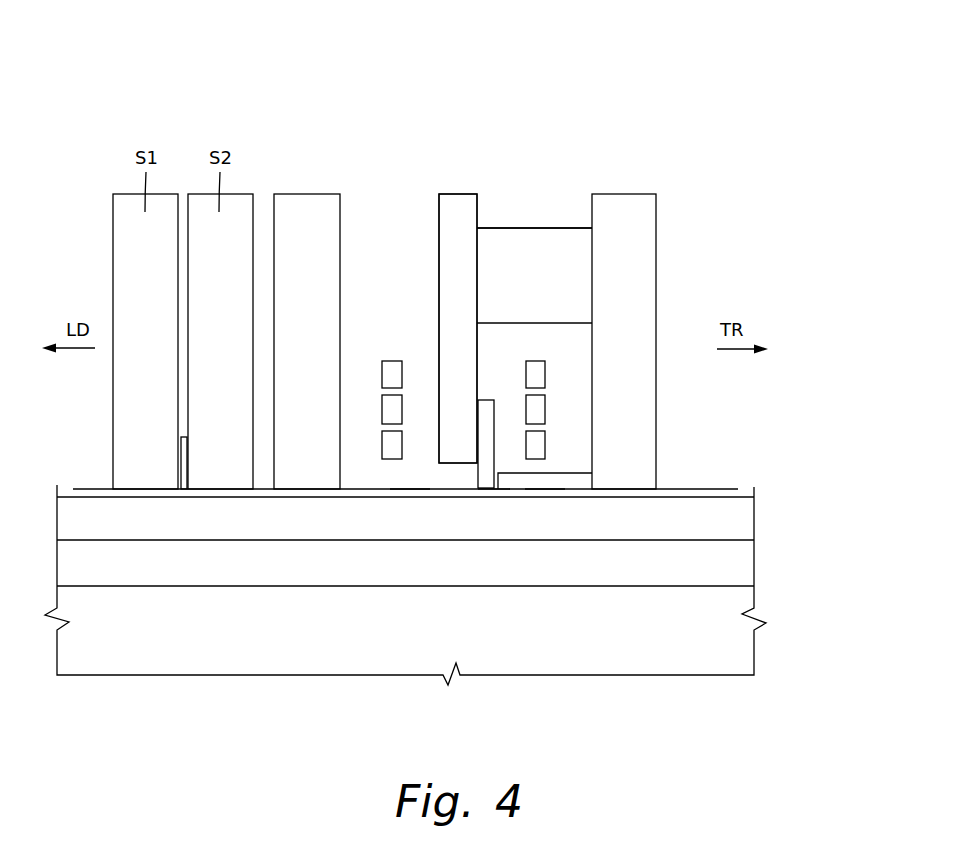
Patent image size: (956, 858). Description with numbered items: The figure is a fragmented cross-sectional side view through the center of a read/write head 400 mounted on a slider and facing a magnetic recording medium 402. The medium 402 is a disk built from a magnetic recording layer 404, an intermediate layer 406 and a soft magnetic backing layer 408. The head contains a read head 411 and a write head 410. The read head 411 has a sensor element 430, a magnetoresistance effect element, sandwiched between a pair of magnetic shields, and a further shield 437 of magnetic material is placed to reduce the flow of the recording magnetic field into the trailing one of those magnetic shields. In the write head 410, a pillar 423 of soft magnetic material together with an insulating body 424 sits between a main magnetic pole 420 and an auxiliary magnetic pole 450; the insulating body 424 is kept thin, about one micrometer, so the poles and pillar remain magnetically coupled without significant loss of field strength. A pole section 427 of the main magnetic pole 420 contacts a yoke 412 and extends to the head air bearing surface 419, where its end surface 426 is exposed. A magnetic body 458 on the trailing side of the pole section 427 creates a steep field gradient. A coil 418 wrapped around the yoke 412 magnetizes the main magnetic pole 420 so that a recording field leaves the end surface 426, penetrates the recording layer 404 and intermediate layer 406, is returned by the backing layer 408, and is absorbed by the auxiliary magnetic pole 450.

The read/write head 400 is at (188, 44).
The magnetic recording medium 402 is at (807, 687).
The magnetic recording layer 404 is at (742, 524).
The intermediate layer 406 is at (742, 567).
The soft magnetic backing layer 408 is at (742, 650).
The write head 410 is at (658, 72).
The read head 411 is at (260, 139).
The yoke 412 is at (457, 212).
The coil 418 is at (393, 363).
The head air bearing surface 419 is at (412, 482).
The main magnetic pole 420 is at (508, 141).
The pillar 423 is at (506, 233).
The insulating body 424 is at (563, 233).
The end surface 426 is at (496, 480).
The pole section 427 is at (484, 406).
The sensor element 430 is at (181, 462).
The shield 437 is at (306, 212).
The auxiliary magnetic pole 450 is at (626, 212).
The magnetic body 458 is at (560, 474).